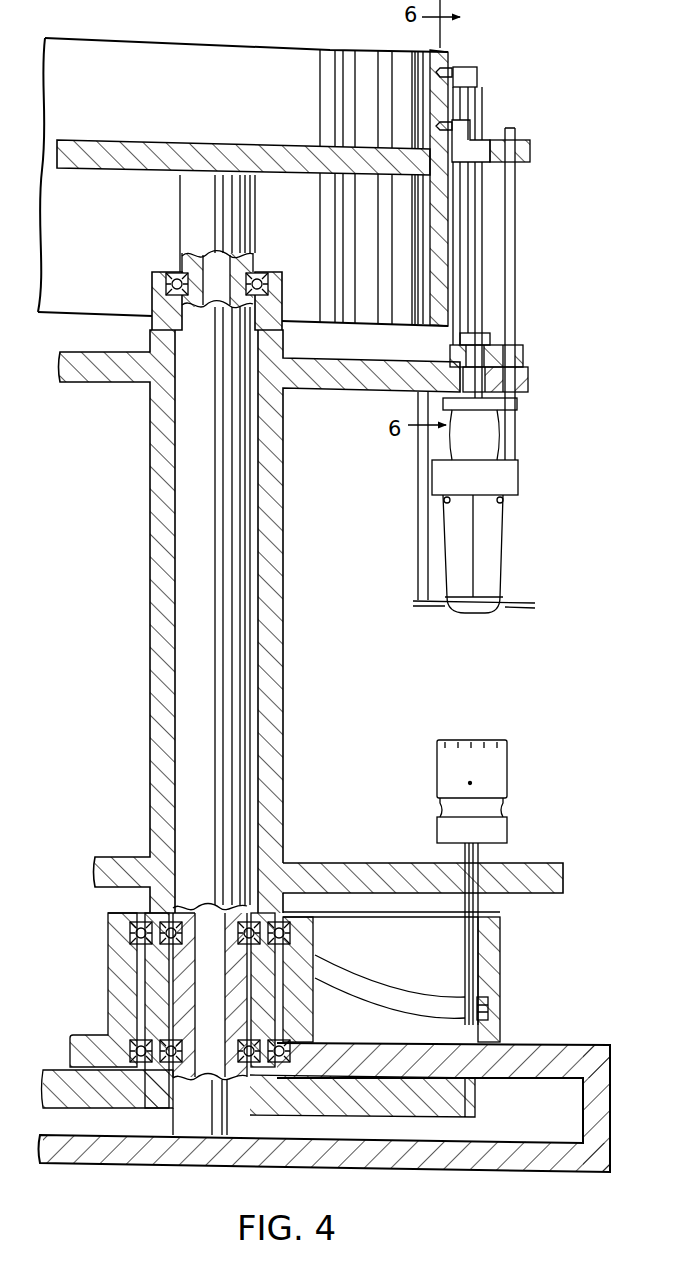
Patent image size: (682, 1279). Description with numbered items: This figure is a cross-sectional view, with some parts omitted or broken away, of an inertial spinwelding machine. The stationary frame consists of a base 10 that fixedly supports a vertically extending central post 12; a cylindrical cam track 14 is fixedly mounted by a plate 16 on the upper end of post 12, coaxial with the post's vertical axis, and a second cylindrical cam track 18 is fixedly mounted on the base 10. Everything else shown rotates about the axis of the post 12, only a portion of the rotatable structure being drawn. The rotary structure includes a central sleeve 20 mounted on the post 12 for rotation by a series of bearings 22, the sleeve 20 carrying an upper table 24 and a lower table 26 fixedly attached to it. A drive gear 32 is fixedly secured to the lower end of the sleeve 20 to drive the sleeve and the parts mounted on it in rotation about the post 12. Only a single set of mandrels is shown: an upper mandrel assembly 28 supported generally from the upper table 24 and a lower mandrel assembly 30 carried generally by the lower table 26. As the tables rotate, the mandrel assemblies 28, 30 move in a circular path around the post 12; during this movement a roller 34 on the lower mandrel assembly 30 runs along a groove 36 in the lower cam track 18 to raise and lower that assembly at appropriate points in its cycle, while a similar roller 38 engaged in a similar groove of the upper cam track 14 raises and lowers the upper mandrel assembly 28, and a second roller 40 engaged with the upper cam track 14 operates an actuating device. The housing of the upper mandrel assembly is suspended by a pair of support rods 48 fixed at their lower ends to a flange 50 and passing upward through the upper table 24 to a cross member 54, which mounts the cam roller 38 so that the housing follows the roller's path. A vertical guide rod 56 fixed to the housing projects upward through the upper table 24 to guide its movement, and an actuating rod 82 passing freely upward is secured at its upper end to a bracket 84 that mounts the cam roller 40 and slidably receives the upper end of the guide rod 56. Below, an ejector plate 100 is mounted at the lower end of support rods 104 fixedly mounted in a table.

The base 10 is at (455, 1172).
The central post 12 is at (190, 668).
The cylindrical cam track 14 is at (305, 55).
The plate 16 is at (272, 155).
The second cylindrical cam track 18 is at (495, 955).
The central sleeve 20 is at (155, 522).
The bearings 22 is at (260, 275).
The upper table 24 is at (528, 380).
The lower table 26 is at (555, 878).
The upper mandrel assembly 28 is at (522, 478).
The lower mandrel assembly 30 is at (517, 775).
The drive gear 32 is at (450, 1100).
The roller 34 is at (490, 1010).
The groove 36 is at (412, 990).
The roller 38 is at (436, 72).
The second roller 40 is at (436, 126).
The support rods 48 is at (468, 102).
The flange 50 is at (517, 404).
The cross member 54 is at (478, 70).
The vertical guide rod 56 is at (515, 208).
The actuating rod 82 is at (482, 244).
The bracket 84 is at (530, 150).
The ejector plate 100 is at (430, 605).
The support rods 104 is at (420, 515).